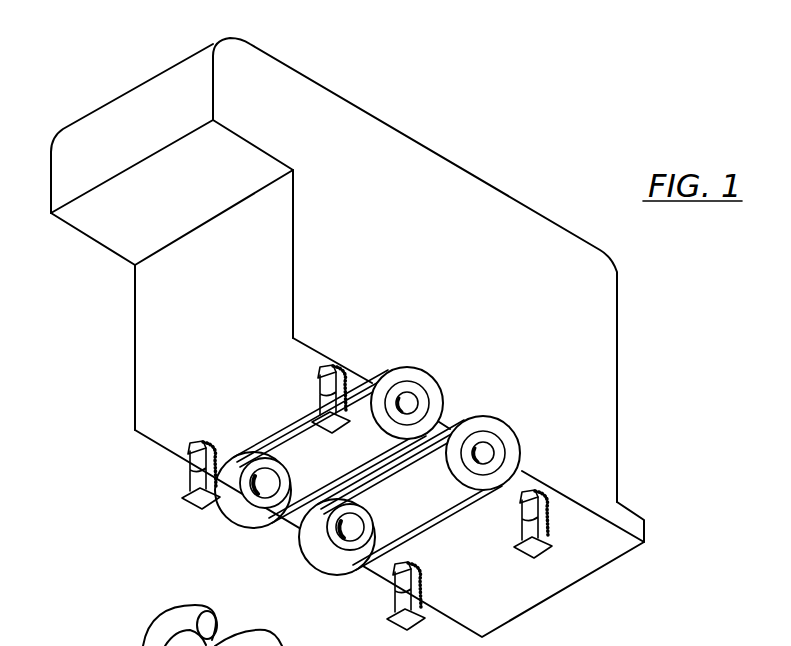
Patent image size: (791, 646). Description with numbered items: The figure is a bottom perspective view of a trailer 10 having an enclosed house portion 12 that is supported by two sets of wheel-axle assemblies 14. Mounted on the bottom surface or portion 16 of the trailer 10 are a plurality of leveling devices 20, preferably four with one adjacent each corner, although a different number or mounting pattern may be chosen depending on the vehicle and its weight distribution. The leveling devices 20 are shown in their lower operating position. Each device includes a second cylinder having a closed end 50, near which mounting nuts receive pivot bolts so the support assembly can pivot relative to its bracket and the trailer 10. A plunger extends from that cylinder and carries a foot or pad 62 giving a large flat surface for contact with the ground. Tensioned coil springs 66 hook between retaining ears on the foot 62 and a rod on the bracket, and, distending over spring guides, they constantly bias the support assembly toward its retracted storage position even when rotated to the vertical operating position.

The trailer 10 is at (621, 362).
The enclosed house portion 12 is at (493, 212).
The wheel-axle assemblies 14 is at (500, 417).
The bottom surface or portion 16 is at (519, 595).
The leveling devices 20 is at (221, 443).
The closed end 50 is at (193, 483).
The foot or pad 62 is at (200, 500).
The tensioned coil springs 66 is at (192, 463).